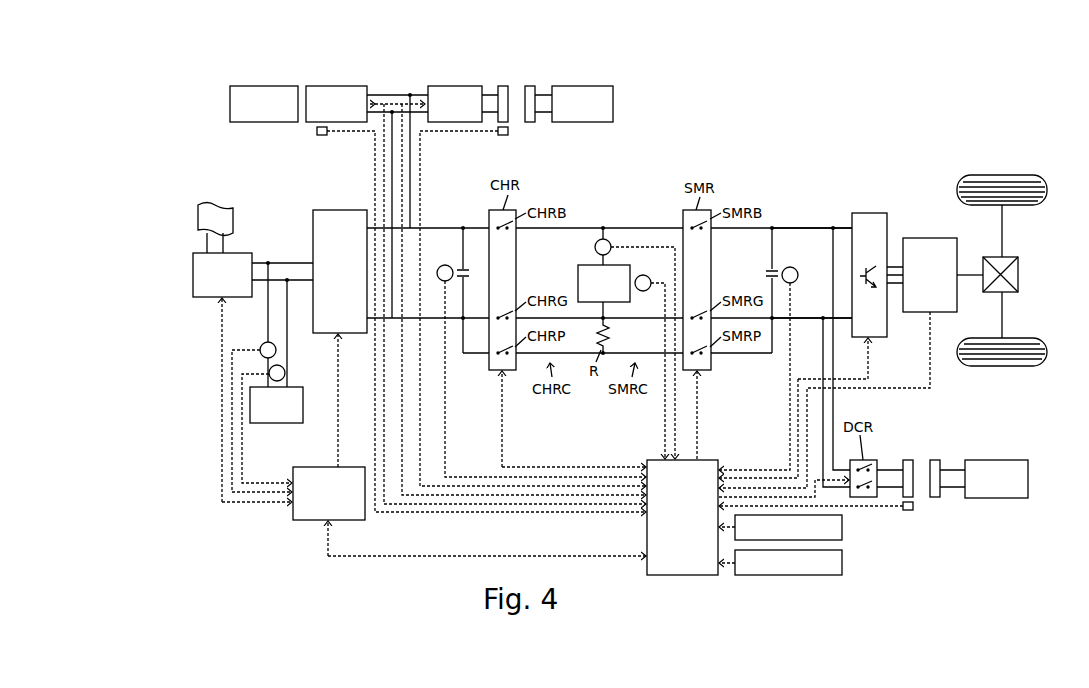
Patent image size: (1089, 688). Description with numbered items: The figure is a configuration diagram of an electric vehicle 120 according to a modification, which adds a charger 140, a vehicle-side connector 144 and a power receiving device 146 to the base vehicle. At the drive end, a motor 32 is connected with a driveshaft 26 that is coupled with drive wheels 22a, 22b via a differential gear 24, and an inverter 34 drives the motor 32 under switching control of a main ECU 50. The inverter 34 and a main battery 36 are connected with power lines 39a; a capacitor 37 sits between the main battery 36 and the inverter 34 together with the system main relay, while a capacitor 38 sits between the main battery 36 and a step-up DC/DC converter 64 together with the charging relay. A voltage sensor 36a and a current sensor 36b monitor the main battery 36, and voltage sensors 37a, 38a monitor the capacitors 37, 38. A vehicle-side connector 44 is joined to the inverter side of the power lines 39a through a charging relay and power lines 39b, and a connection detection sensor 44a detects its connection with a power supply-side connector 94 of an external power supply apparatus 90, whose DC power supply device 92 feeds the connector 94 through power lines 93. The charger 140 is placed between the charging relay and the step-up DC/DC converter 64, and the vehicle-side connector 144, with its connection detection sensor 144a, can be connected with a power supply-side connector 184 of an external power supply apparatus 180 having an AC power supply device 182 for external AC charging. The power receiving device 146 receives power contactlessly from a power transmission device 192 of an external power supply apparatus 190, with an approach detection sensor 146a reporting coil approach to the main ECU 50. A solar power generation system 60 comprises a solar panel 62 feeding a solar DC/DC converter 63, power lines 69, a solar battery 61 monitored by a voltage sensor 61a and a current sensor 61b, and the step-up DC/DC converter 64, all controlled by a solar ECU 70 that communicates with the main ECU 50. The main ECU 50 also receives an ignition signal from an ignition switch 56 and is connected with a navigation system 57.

The external power supply apparatus 190 is at (238, 56).
The power transmission device 192 is at (269, 85).
The power receiving device 146 is at (338, 86).
The approach detection sensor 146a is at (322, 136).
The charger 140 is at (455, 86).
The vehicle-side connector 144 is at (501, 86).
The connection detection sensor 144a is at (503, 136).
The external power supply apparatus 180 is at (556, 57).
The power supply-side connector 184 is at (530, 86).
The AC power supply device 182 is at (580, 86).
The electric vehicle 120 is at (817, 166).
The solar power generation system 60 is at (283, 201).
The solar panel 62 is at (217, 202).
The solar DC/DC converter 63 is at (242, 252).
The power lines 69 is at (298, 279).
The step-up DC/DC converter 64 is at (338, 210).
The solar battery 61 is at (275, 424).
The voltage sensor 61a is at (285, 374).
The current sensor 61b is at (277, 350).
The solar ECU 70 is at (312, 466).
The capacitor 38 is at (467, 267).
The voltage sensor 38a is at (443, 264).
The main battery 36 is at (618, 265).
The voltage sensor 36a is at (644, 274).
The current sensor 36b is at (601, 239).
The capacitor 37 is at (767, 269).
The voltage sensor 37a is at (790, 266).
The power lines 39a is at (812, 317).
The inverter 34 is at (868, 213).
The motor 32 is at (932, 238).
The driveshaft 26 is at (967, 273).
The differential gear 24 is at (1010, 257).
The drive wheel 22a is at (1002, 175).
The drive wheel 22b is at (1002, 367).
The main ECU 50 is at (657, 459).
The ignition switch 56 is at (843, 526).
The navigation system 57 is at (843, 561).
The power lines 39b is at (890, 486).
The vehicle-side connector 44 is at (909, 460).
The connection detection sensor 44a is at (908, 511).
The external power supply apparatus 90 is at (974, 432).
The power supply-side connector 94 is at (935, 460).
The power lines 93 is at (952, 486).
The DC power supply device 92 is at (995, 460).